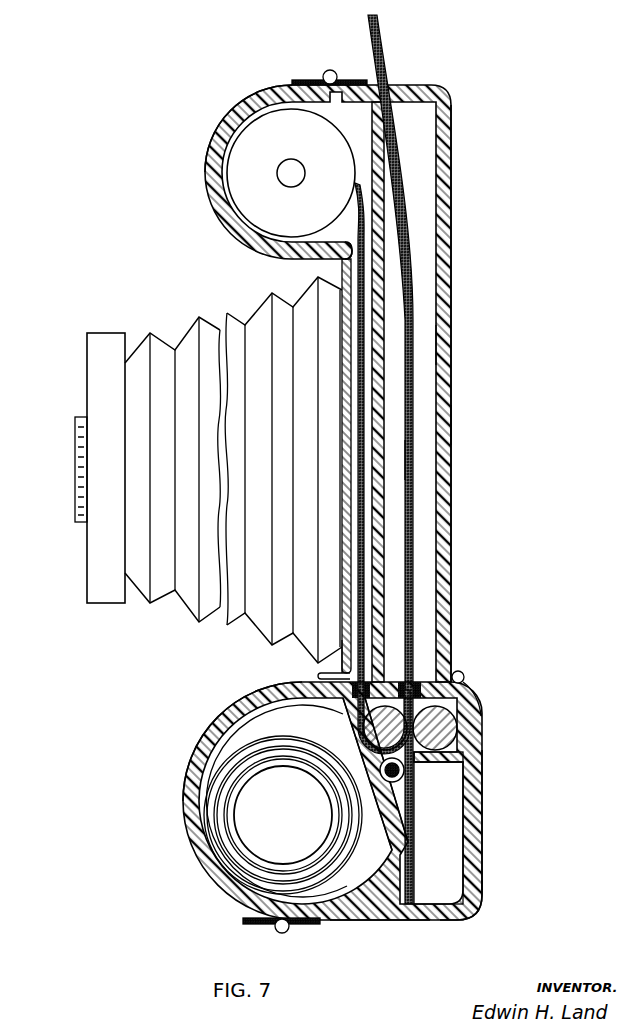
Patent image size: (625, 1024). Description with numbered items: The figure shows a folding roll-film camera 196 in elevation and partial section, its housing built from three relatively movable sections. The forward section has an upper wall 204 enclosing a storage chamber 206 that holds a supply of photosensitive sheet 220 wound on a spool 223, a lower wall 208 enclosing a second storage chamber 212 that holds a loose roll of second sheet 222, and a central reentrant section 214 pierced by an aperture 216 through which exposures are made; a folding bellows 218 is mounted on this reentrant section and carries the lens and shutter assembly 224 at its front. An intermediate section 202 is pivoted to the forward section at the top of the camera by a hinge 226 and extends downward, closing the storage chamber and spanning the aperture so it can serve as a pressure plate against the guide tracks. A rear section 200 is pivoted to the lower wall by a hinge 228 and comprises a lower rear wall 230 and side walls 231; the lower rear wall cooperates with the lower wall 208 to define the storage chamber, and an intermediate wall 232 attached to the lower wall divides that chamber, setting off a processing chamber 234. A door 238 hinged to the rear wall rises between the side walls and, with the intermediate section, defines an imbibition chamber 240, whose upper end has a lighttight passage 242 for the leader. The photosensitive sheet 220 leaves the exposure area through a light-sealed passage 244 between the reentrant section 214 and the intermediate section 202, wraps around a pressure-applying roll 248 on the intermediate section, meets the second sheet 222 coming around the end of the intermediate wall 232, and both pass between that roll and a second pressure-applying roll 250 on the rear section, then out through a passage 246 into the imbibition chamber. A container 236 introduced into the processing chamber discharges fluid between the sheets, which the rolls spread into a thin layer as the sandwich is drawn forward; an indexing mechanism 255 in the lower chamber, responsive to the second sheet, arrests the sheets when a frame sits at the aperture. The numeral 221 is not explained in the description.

The camera 196 is at (470, 312).
The rear section 200 is at (496, 821).
The intermediate section 202 is at (385, 278).
The upper wall 204 is at (249, 97).
The storage chamber 206 is at (341, 123).
The lower wall 208 is at (179, 829).
The second storage chamber 212 is at (363, 905).
The central reentrant section 214 is at (340, 261).
The aperture 216 is at (350, 391).
The folding bellows 218 is at (190, 330).
The photosensitive sheet 220 is at (367, 231).
The supply roll core 221 is at (276, 209).
The second sheet 222 is at (362, 886).
The spool 223 is at (252, 829).
The lens and shutter assembly 224 is at (92, 581).
The hinge 226 is at (329, 70).
The hinge 228 is at (284, 934).
The lower rear wall 230 is at (467, 886).
The side walls 231 is at (427, 343).
The intermediate wall 232 is at (395, 849).
The processing chamber 234 is at (421, 754).
The container 236 is at (405, 772).
The door 238 is at (447, 427).
The imbibition chamber 240 is at (404, 459).
The passage 242 is at (394, 82).
The passage 244 is at (336, 680).
The passage 246 is at (420, 680).
The pressure-applying roll 248 is at (375, 721).
The pressure-applying roll 250 is at (447, 715).
The indexing mechanism 255 is at (423, 839).